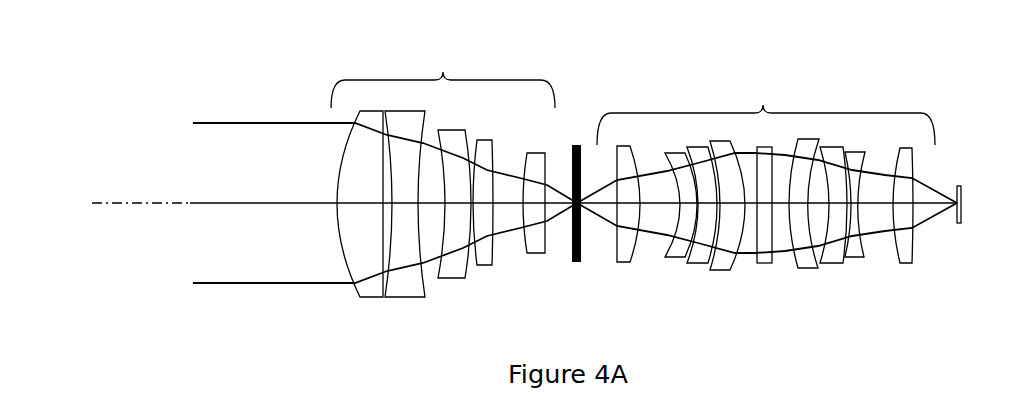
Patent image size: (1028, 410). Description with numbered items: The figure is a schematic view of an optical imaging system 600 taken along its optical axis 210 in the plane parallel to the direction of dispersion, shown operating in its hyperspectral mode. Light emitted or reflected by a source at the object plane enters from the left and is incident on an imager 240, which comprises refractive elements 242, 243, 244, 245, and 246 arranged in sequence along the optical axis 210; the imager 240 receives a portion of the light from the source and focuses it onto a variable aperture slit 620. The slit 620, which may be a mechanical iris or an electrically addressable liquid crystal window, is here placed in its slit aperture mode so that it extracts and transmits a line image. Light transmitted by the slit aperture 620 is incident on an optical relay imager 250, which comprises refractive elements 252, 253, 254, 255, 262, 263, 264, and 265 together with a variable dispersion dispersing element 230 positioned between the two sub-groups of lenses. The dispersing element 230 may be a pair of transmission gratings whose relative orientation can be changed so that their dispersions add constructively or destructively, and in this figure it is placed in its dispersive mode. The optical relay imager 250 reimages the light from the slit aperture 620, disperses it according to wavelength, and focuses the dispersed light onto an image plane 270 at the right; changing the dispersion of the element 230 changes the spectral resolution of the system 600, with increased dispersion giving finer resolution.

The optical imaging system 600 is at (158, 78).
The optical axis 210 is at (128, 206).
The imager 240 is at (443, 72).
The refractive element 242 is at (370, 298).
The refractive element 243 is at (402, 298).
The refractive element 244 is at (448, 279).
The refractive element 245 is at (492, 266).
The refractive element 246 is at (536, 254).
The variable aperture slit 620 is at (577, 263).
The optical relay imager 250 is at (763, 105).
The refractive element 252 is at (625, 263).
The refractive element 253 is at (673, 258).
The refractive element 254 is at (697, 264).
The refractive element 255 is at (720, 271).
The variable dispersion dispersing element 230 is at (764, 264).
The refractive element 262 is at (808, 269).
The refractive element 263 is at (832, 264).
The refractive element 264 is at (855, 258).
The refractive element 265 is at (905, 264).
The image plane 270 is at (962, 190).